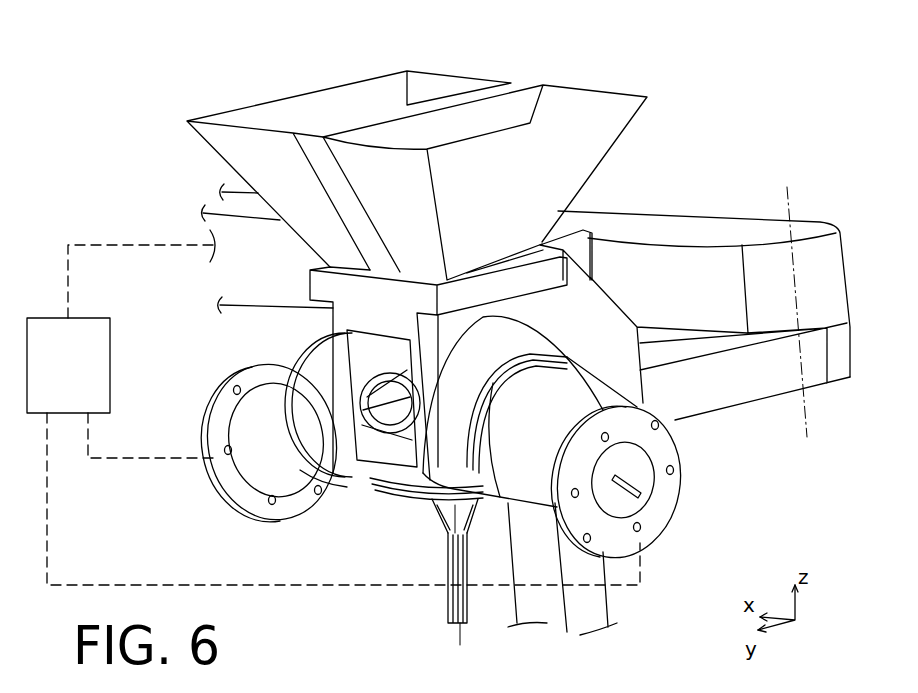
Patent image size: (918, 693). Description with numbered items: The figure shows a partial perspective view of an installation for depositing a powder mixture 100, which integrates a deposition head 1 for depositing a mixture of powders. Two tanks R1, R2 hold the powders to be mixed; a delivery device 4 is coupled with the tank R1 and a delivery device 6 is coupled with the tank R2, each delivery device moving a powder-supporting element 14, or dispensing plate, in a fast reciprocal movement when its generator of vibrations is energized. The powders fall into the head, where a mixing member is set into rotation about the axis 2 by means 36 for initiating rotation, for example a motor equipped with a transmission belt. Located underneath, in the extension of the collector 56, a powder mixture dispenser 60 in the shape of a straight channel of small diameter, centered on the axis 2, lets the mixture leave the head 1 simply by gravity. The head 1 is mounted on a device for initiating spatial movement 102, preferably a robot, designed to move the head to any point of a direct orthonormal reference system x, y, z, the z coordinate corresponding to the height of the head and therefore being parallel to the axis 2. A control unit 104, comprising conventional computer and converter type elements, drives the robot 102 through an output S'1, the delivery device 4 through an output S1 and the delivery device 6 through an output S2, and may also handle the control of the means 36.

The installation for depositing a powder mixture 100 is at (180, 83).
The tank R1 is at (233, 150).
The tank R2 is at (613, 135).
The means for initiating rotation 36 is at (593, 252).
The device for initiating spatial movement 102 is at (828, 270).
The powder-supporting element 14 is at (338, 352).
The delivery device 4 is at (245, 415).
The control unit 104 is at (105, 346).
The deposition head 1 is at (320, 530).
The collector 56 is at (438, 503).
The powder mixture dispenser 60 is at (453, 595).
The axis 2 is at (453, 632).
The delivery device 6 is at (662, 491).
The output S'1 is at (141, 274).
The output S1 is at (150, 435).
The output S2 is at (327, 499).